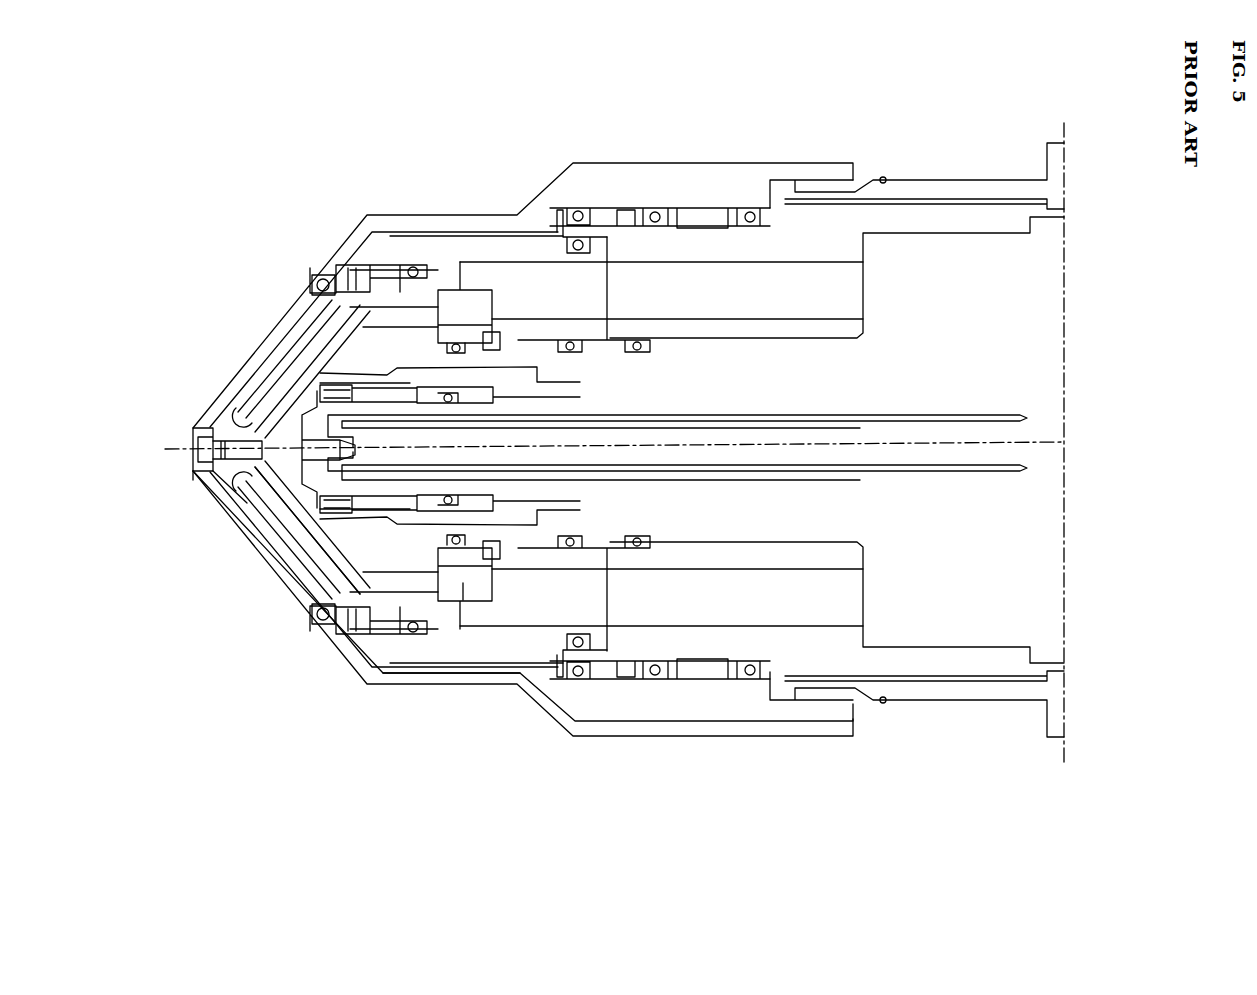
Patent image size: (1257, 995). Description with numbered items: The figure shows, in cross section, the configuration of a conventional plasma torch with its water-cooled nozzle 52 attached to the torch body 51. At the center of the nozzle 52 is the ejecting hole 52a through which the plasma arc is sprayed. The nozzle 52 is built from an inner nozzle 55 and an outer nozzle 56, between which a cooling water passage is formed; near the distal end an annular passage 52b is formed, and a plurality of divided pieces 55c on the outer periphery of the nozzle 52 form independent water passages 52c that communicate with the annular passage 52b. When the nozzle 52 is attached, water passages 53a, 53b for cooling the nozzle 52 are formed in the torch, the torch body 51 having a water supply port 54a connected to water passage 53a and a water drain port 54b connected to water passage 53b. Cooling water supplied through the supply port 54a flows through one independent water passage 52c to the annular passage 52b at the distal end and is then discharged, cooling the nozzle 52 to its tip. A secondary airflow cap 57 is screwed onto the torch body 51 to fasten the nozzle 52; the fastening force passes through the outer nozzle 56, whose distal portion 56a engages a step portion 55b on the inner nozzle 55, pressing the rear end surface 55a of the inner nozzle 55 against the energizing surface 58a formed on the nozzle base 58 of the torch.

The torch body 51 is at (928, 295).
The nozzle 52 is at (176, 447).
The ejecting hole 52a is at (230, 458).
The annular passage 52b is at (275, 535).
The independent water passages 52c is at (383, 637).
The water passage 53a is at (590, 300).
The water passage 53b is at (793, 600).
The water supply port 54a is at (455, 300).
The water drain port 54b is at (455, 585).
The inner nozzle 55 is at (348, 355).
The end surface 55a is at (510, 350).
The step portion 55b is at (200, 425).
The divided pieces 55c is at (357, 620).
The outer nozzle 56 is at (300, 350).
The distal portion 56a is at (262, 395).
The secondary airflow cap 57 is at (250, 420).
The nozzle base 58 is at (500, 245).
The energizing surface 58a is at (470, 357).